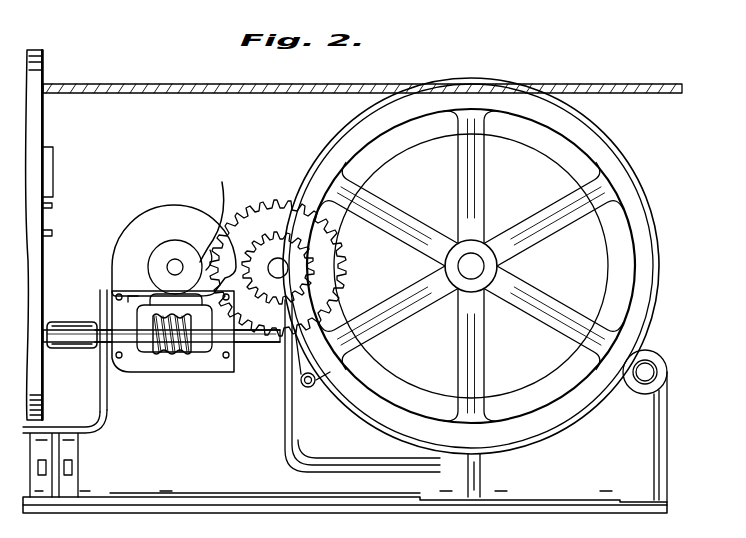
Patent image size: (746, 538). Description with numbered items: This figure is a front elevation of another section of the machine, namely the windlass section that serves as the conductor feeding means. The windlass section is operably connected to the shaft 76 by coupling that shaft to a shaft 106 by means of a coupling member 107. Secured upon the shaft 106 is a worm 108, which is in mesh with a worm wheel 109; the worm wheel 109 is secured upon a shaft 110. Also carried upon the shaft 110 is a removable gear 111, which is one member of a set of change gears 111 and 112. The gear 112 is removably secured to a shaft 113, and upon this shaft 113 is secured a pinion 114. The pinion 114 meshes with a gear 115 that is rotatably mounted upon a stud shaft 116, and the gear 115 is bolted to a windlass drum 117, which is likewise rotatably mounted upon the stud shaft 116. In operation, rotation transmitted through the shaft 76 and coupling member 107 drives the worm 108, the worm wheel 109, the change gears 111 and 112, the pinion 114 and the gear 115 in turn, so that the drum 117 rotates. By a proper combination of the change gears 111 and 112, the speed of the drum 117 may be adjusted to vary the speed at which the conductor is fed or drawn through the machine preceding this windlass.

The shaft 76 is at (50, 318).
The shaft 106 is at (97, 348).
The coupling member 107 is at (73, 330).
The worm 108 is at (180, 352).
The worm wheel 109 is at (157, 348).
The shaft 110 is at (173, 264).
The removable gear 111 is at (208, 236).
The gear 112 is at (268, 225).
The shaft 113 is at (272, 300).
The pinion 114 is at (278, 280).
The gear 115 is at (318, 268).
The stud shaft 116 is at (474, 268).
The windlass drum 117 is at (598, 134).